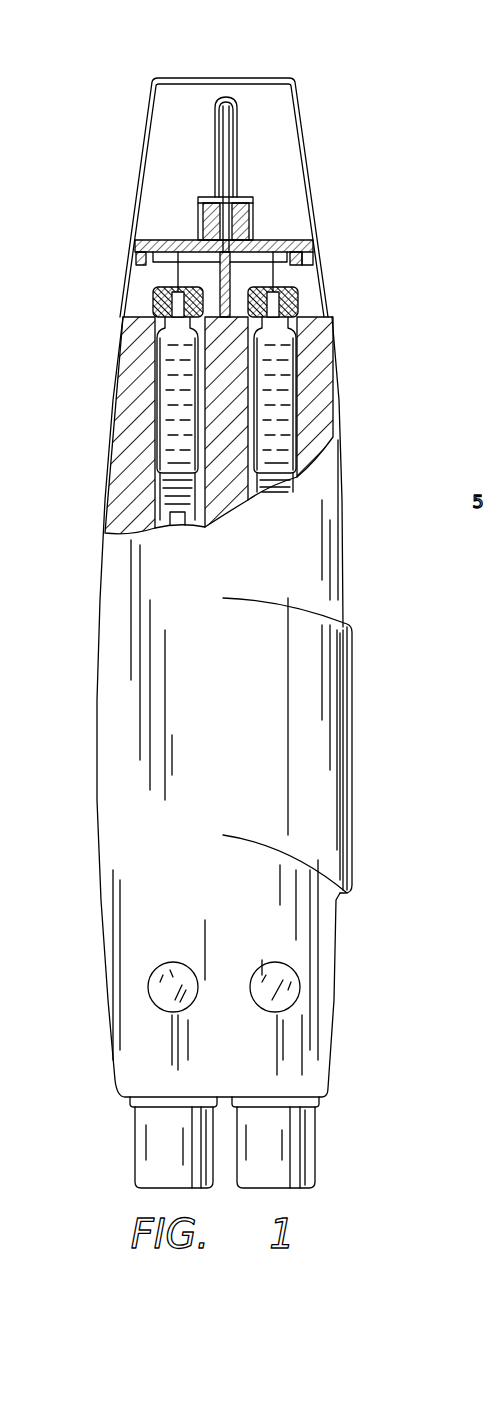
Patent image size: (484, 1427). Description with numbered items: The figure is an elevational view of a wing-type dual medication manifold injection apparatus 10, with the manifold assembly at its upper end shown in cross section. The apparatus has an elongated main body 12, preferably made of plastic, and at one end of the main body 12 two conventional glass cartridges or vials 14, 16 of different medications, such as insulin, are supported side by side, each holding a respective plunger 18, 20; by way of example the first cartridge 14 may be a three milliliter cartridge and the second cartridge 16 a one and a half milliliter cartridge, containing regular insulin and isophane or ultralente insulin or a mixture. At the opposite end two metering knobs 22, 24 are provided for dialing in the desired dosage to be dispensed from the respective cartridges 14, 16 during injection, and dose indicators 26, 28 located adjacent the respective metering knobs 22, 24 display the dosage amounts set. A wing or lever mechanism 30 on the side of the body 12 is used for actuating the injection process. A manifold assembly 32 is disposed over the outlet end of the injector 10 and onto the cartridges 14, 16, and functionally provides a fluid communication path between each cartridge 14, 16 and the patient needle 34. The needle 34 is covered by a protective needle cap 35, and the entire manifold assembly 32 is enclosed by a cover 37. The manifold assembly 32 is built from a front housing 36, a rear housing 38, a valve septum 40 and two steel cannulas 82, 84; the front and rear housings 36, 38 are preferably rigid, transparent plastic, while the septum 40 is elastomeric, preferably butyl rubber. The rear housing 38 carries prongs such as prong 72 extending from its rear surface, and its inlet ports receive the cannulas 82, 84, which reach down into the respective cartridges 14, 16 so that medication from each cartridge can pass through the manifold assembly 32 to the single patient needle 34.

The wing-type dual medication manifold injection apparatus 10 is at (372, 364).
The elongated main body 12 is at (130, 815).
The first cartridge 14 is at (172, 400).
The second cartridge 16 is at (275, 403).
The plunger 18 is at (167, 487).
The plunger 20 is at (273, 482).
The metering knob 22 is at (152, 1141).
The metering knob 24 is at (290, 1150).
The dose indicator 26 is at (163, 983).
The dose indicator 28 is at (287, 997).
The wing or lever mechanism 30 is at (333, 822).
The manifold assembly 32 is at (276, 211).
The patient needle 34 is at (229, 150).
The protective needle cap 35 is at (237, 122).
The front housing 36 is at (172, 234).
The cover 37 is at (282, 78).
The rear housing 38 is at (313, 273).
The valve septum 40 is at (252, 234).
The prong 72 is at (220, 280).
The cannula 82 is at (153, 288).
The cannula 84 is at (262, 282).